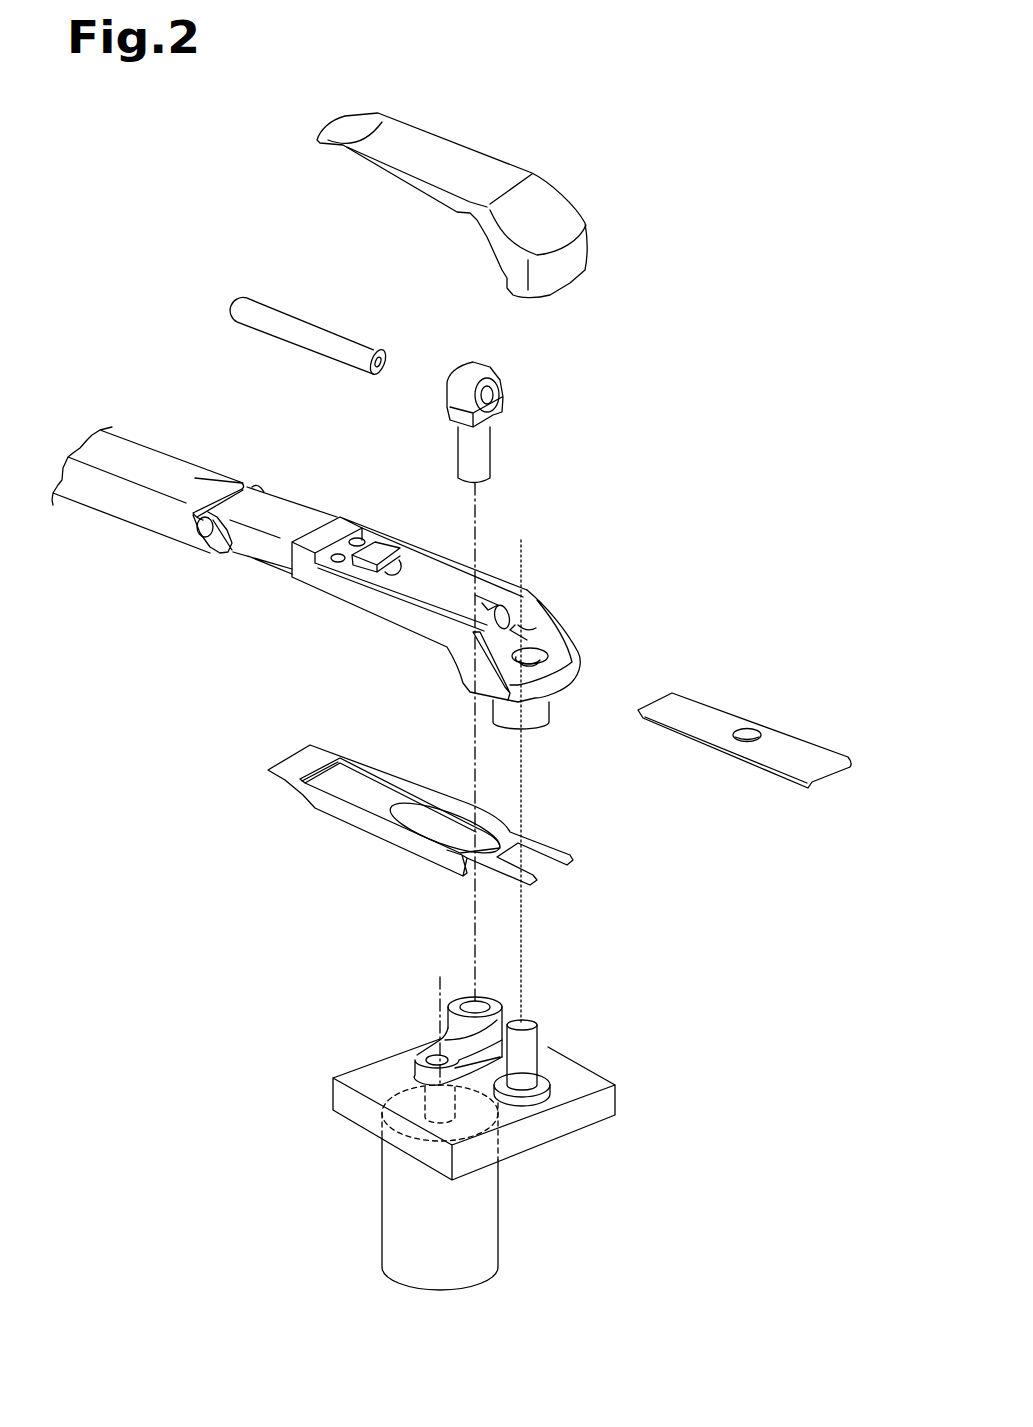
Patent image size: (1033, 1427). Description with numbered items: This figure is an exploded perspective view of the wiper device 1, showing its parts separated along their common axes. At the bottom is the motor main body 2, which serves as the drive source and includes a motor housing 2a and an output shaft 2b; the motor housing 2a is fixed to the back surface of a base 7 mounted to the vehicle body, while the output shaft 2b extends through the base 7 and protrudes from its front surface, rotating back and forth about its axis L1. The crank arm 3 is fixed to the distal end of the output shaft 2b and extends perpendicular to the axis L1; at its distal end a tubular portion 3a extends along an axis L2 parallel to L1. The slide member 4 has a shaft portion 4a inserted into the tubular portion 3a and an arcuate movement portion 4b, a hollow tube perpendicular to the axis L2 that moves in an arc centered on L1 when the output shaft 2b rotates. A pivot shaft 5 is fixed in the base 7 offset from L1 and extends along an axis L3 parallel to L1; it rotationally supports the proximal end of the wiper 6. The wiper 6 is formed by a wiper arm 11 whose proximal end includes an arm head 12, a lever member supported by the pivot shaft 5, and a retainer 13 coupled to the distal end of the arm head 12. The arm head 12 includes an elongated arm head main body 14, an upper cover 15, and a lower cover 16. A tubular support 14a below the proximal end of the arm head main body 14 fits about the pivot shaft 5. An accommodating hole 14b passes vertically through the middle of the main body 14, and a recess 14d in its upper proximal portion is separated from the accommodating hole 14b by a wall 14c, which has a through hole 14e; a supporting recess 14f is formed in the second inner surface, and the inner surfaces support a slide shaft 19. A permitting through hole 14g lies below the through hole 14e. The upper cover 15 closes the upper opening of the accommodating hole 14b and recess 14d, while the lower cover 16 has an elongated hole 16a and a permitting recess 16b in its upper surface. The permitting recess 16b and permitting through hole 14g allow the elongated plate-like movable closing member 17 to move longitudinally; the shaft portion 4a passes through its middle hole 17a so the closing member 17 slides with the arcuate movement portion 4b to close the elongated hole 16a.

The wiper device 1 is at (203, 139).
The motor main body 2 is at (439, 1180).
The motor housing 2a is at (493, 1223).
The output shaft 2b is at (420, 1092).
The crank arm 3 is at (462, 1041).
The tubular portion 3a is at (488, 995).
The slide member 4 is at (491, 403).
The shaft portion 4a is at (489, 450).
The arcuate movement portion 4b is at (470, 364).
The pivot shaft 5 is at (531, 1048).
The wiper 6 is at (194, 460).
The base 7 is at (617, 1100).
The wiper arm 11 is at (312, 444).
The arm head 12 is at (291, 482).
The retainer 13 is at (224, 458).
The arm head main body 14 is at (460, 616).
The tubular support 14a is at (550, 710).
The accommodating hole 14b is at (435, 573).
The wall 14c is at (505, 582).
The recess 14d is at (550, 657).
The through hole 14e is at (518, 613).
The supporting recess 14f is at (405, 572).
The permitting through hole 14g is at (527, 628).
The upper cover 15 is at (482, 160).
The lower cover 16 is at (420, 803).
The elongated hole 16a is at (430, 810).
The permitting recess 16b is at (348, 777).
The movable closing member 17 is at (744, 727).
The middle hole 17a is at (757, 724).
The slide shaft 19 is at (320, 333).
The axis of the output shaft L1 is at (438, 985).
The axis of the tubular portion L2 is at (470, 932).
The axis of the pivot shaft L3 is at (530, 930).